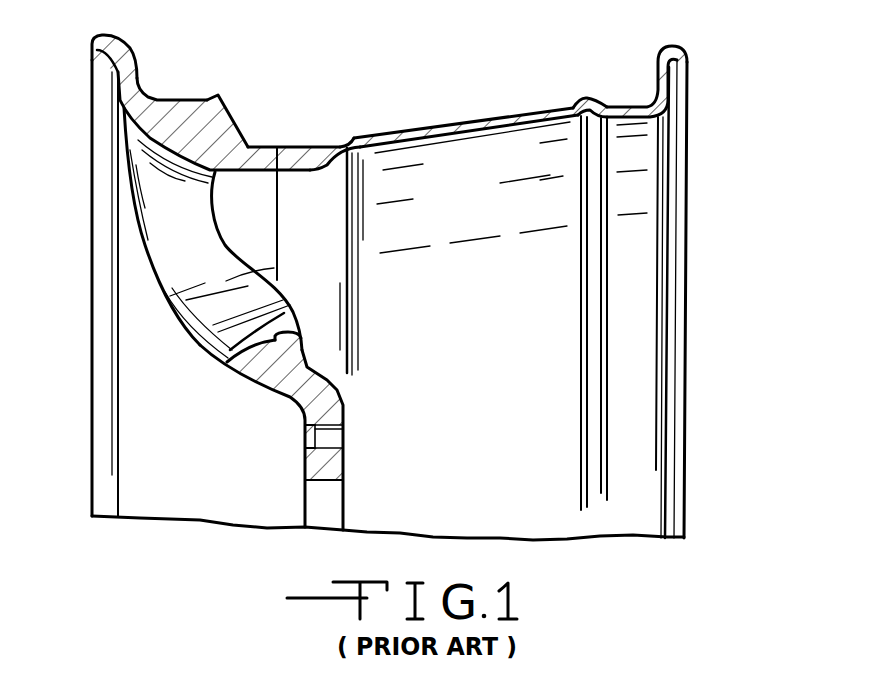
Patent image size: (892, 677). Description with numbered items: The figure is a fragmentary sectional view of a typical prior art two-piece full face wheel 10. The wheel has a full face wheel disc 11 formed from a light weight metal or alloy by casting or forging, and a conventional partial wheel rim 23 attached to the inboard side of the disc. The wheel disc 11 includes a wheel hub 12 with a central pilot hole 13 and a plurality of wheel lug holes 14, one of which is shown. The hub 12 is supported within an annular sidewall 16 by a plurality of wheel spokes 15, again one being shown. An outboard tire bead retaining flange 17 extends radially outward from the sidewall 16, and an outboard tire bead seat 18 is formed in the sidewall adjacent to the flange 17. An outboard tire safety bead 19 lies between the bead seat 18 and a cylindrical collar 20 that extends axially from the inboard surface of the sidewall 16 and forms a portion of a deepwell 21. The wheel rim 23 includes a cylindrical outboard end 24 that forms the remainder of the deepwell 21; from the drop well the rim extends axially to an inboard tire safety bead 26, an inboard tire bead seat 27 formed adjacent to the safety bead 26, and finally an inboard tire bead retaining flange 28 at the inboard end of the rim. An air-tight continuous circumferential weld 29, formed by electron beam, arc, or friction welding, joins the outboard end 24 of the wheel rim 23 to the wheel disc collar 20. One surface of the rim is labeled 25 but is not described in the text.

The full face wheel 10 is at (404, 107).
The full face wheel disc 11 is at (60, 420).
The wheel hub 12 is at (331, 401).
The central pilot hole 13 is at (331, 507).
The wheel lug holes 14 is at (315, 436).
The wheel spokes 15 is at (278, 271).
The annular sidewall 16 is at (164, 135).
The outboard tire bead retaining flange 17 is at (138, 55).
The outboard tire bead seat 18 is at (174, 100).
The outboard tire safety bead 19 is at (243, 83).
The cylindrical collar 20 is at (215, 197).
The deepwell 21 is at (320, 130).
The partial wheel rim 23 is at (459, 108).
The cylindrical outboard end 24 is at (318, 175).
The well surface 25 is at (469, 128).
The inboard tire safety bead 26 is at (592, 97).
The inboard tire bead seat 27 is at (620, 101).
The inboard tire bead retaining flange 28 is at (668, 77).
The continuous circumferential weld 29 is at (276, 147).